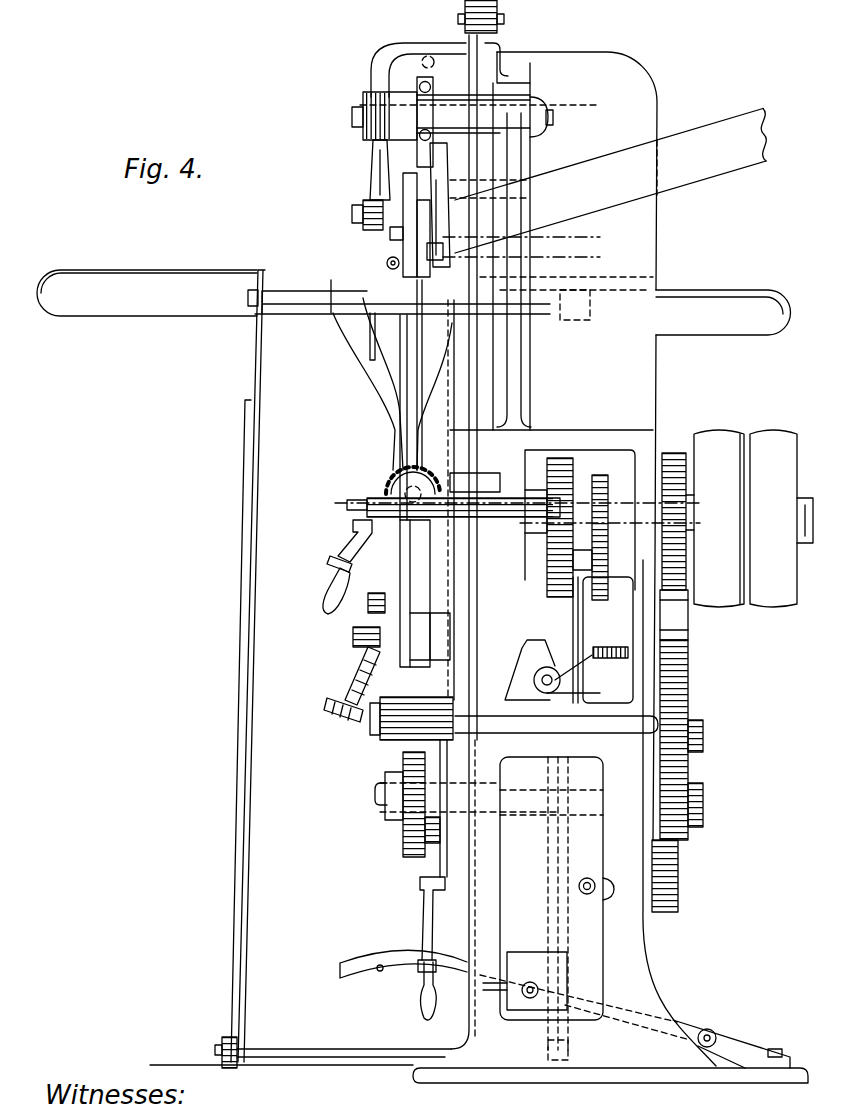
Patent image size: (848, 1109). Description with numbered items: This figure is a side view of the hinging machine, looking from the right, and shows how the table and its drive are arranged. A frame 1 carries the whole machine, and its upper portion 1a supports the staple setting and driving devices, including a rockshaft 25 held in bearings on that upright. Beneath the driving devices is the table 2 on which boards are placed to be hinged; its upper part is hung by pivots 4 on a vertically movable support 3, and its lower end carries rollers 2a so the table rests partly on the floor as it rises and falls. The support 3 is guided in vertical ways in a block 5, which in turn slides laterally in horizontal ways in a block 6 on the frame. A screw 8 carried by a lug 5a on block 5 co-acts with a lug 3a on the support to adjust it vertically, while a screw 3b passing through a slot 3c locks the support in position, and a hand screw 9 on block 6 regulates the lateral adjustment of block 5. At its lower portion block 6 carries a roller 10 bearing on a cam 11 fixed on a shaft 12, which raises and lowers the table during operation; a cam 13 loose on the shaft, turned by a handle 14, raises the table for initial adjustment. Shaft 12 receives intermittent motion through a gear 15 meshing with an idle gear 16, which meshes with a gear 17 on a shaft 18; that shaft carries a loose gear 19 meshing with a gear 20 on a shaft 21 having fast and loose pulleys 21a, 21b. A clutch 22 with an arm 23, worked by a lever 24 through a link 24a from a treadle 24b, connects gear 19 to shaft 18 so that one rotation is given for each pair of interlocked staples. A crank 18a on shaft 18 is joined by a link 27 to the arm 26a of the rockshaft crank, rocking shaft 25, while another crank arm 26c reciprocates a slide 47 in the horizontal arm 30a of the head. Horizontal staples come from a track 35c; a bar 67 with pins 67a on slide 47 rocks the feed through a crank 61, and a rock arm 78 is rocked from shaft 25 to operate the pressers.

The frame 1 is at (479, 541).
The upper portion of frame 1a is at (549, 116).
The table 2 is at (257, 357).
The rollers 2a is at (218, 1045).
The vertically movable support 3 is at (350, 363).
The lug on support 3a is at (366, 602).
The locking screw 3b is at (347, 504).
The slot 3c is at (350, 537).
The pivots 4 is at (268, 311).
The block 5 is at (415, 593).
The lug on block 5a is at (357, 638).
The block 6 is at (430, 641).
The screw 8 is at (352, 668).
The hand screw 9 is at (393, 477).
The roller 10 is at (417, 718).
The cam 11 is at (405, 823).
The shaft 12 is at (375, 797).
The loose cam 13 is at (425, 850).
The handle 14 is at (424, 920).
The gear 15 is at (678, 875).
The idle gear 16 is at (690, 650).
The gear 17 is at (691, 620).
The shaft 18 is at (692, 572).
The crank 18a is at (472, 480).
The gear 19 is at (603, 640).
The gear 20 is at (578, 466).
The shaft 21 is at (447, 500).
The fast pulley 21a is at (728, 430).
The loose pulley 21b is at (785, 430).
The clutch 22 is at (605, 525).
The clutch arm 23 is at (610, 636).
The lever 24 is at (528, 656).
The link 24a is at (633, 933).
The treadle 24b is at (397, 975).
The rockshaft 25 is at (367, 127).
The crank arm 26a is at (430, 50).
The crank arm 26c is at (380, 185).
The link 27 is at (492, 376).
The horizontal arm of head 30a is at (363, 204).
The staple track 35c is at (610, 181).
The slide 47 is at (386, 266).
The crank 61 is at (444, 205).
The bar 67 is at (427, 250).
The pins 67a is at (390, 233).
The rock arm 78 is at (434, 175).